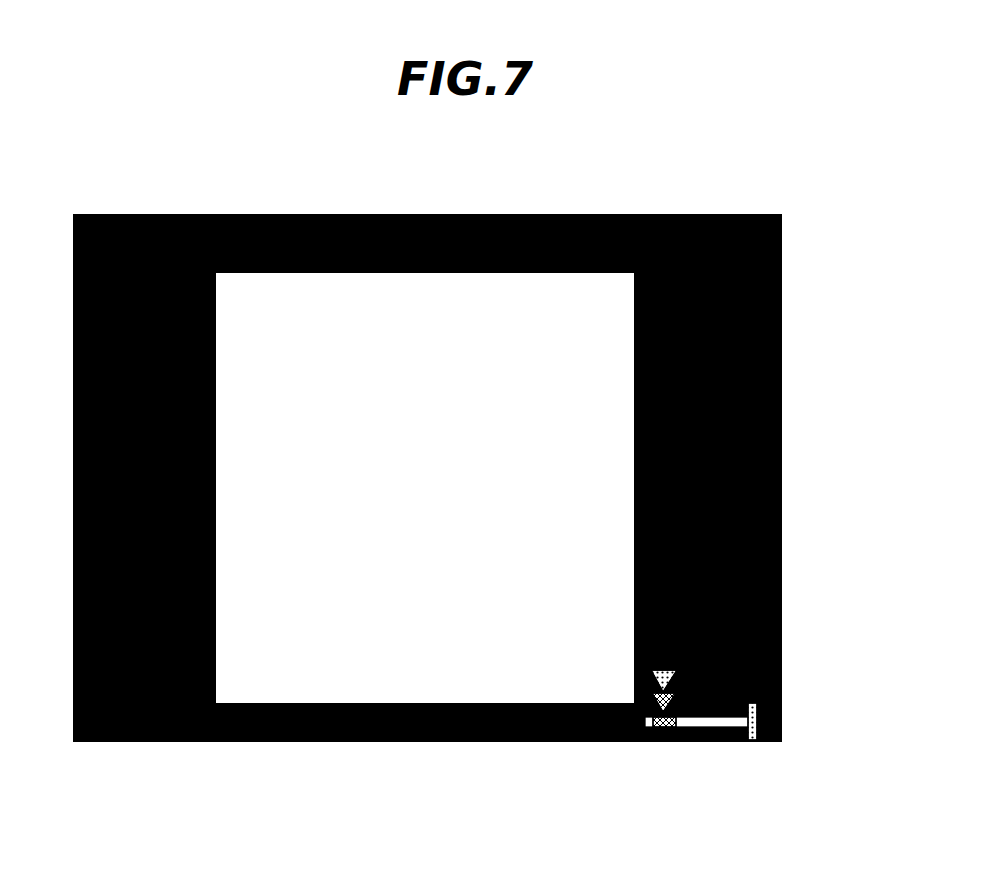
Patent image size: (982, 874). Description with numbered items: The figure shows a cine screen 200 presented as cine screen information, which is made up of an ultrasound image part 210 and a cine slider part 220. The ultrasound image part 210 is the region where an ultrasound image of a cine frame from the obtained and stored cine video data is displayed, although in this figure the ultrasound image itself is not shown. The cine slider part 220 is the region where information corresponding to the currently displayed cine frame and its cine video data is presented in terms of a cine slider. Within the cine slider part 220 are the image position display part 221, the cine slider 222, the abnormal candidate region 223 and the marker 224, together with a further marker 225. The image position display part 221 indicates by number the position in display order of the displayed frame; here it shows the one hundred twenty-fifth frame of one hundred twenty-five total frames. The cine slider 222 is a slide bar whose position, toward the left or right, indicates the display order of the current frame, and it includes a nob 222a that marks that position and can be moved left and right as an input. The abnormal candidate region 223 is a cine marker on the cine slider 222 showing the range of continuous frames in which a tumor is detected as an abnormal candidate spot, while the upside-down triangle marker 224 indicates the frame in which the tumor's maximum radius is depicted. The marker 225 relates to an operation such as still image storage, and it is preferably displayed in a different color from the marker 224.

The cine screen 200 is at (460, 482).
The ultrasound image part 210 is at (536, 268).
The cine slider part 220 is at (746, 682).
The image position display part 221 is at (592, 728).
The cine slider 222 is at (717, 728).
The nob 222a is at (755, 740).
The abnormal candidate region 223 is at (665, 728).
The marker 224 is at (676, 693).
The marker 225 is at (677, 670).